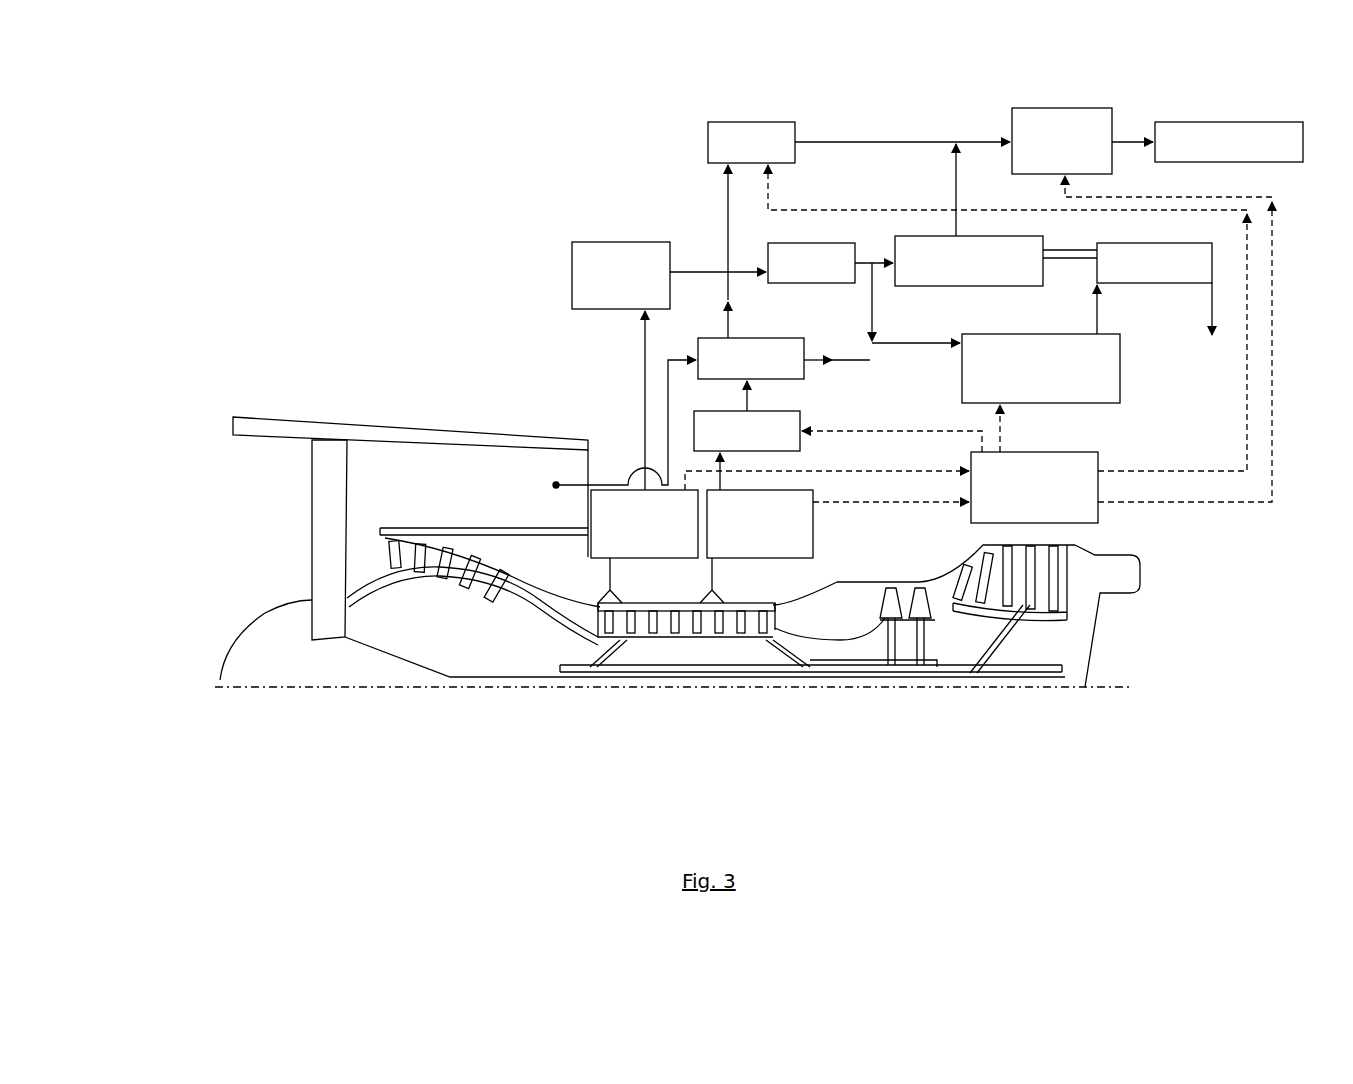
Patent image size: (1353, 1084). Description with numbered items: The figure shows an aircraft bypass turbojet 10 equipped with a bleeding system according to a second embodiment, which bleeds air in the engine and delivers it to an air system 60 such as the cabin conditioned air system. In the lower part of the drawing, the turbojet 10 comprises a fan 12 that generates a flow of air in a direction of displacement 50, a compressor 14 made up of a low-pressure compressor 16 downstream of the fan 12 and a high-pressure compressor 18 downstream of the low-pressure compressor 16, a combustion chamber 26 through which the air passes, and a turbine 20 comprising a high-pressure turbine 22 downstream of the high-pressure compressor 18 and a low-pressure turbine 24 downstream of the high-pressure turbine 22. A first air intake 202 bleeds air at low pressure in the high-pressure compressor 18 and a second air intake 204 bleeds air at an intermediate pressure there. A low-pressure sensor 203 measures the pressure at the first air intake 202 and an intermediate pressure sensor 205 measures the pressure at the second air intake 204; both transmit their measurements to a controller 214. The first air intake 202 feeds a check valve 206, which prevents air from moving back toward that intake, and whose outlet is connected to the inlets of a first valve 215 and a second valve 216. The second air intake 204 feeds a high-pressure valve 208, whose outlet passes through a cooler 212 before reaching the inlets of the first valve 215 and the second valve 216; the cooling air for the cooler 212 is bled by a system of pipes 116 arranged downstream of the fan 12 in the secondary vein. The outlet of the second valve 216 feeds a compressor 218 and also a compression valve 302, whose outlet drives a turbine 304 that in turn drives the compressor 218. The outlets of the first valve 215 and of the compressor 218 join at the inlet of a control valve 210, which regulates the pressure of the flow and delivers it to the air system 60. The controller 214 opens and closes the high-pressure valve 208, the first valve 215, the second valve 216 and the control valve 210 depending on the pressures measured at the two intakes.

The turbojet 10 is at (218, 796).
The fan 12 is at (320, 475).
The compressor 14 is at (368, 760).
The low-pressure compressor 16 is at (437, 710).
The high-pressure compressor 18 is at (622, 720).
The turbine 20 is at (1097, 747).
The high-pressure turbine 22 is at (887, 727).
The low-pressure turbine 24 is at (968, 737).
The combustion chamber 26 is at (850, 628).
The direction of displacement 50 is at (110, 550).
The air system 60 is at (1236, 122).
The system of pipes 116 is at (553, 485).
The first air intake 202 is at (598, 622).
The low-pressure sensor 203 is at (622, 558).
The second air intake 204 is at (683, 642).
The intermediate pressure sensor 205 is at (725, 558).
The check valve 206 is at (572, 274).
The high-pressure valve 208 is at (800, 414).
The control valve 210 is at (1045, 108).
The cooler 212 is at (763, 340).
The controller 214 is at (1090, 452).
The first valve 215 is at (745, 122).
The second valve 216 is at (768, 260).
The compressor 218 is at (912, 286).
The compression valve 302 is at (1120, 366).
The turbine 304 is at (1120, 283).